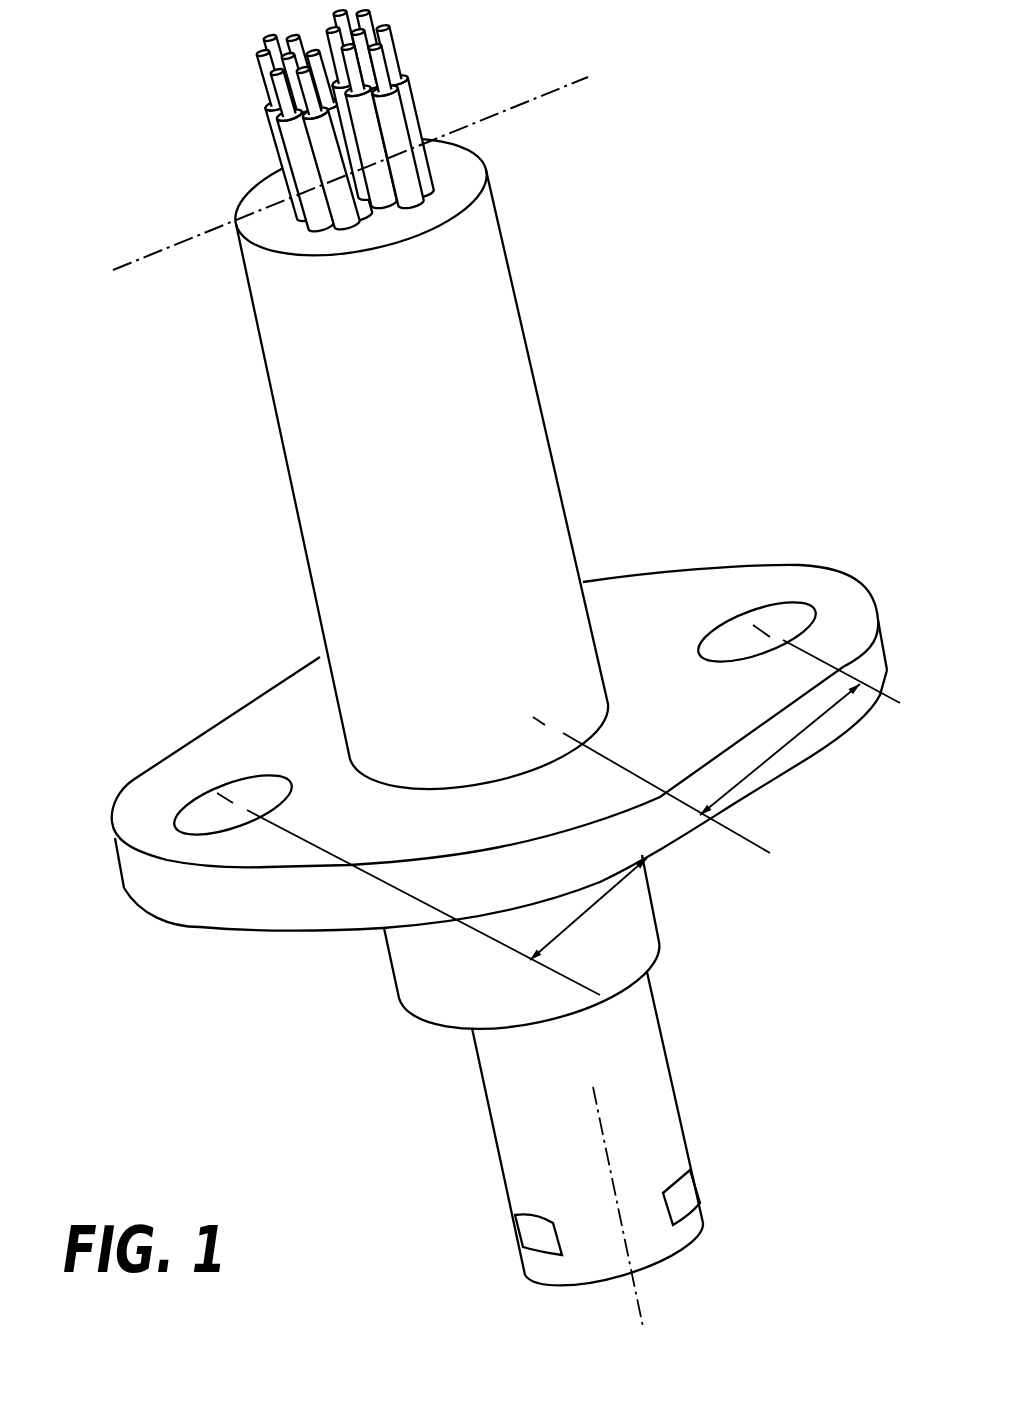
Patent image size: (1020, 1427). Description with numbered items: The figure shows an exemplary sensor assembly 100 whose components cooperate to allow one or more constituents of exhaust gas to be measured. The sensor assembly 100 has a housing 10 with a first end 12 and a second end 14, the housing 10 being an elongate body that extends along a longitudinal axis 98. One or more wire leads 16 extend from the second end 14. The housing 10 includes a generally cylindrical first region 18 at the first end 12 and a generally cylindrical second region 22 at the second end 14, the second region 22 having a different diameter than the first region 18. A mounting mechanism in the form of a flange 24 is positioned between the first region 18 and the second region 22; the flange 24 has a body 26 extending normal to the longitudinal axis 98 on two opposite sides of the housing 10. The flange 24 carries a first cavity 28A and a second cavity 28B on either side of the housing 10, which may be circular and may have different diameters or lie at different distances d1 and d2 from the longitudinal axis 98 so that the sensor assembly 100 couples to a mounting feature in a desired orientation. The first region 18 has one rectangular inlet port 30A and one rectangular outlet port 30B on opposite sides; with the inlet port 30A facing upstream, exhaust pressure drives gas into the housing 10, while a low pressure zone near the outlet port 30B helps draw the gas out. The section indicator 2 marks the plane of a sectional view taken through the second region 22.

The sensor assembly 100 is at (90, 121).
The housing 10 is at (527, 357).
The first end 12 is at (695, 1251).
The second end 14 is at (490, 160).
The wire leads 16 is at (300, 146).
The first region 18 is at (503, 1112).
The second region 22 is at (272, 400).
The flange 24 is at (250, 737).
The body 26 is at (632, 948).
The first cavity 28A is at (193, 813).
The second cavity 28B is at (778, 612).
The inlet port 30A is at (688, 1190).
The outlet port 30B is at (525, 1232).
The longitudinal axis 98 is at (640, 1307).
The section line 2- 2 is at (656, 90).
The distance of first cavity from longitudinal axis d1 is at (793, 740).
The distance of second cavity from longitudinal axis d2 is at (600, 900).